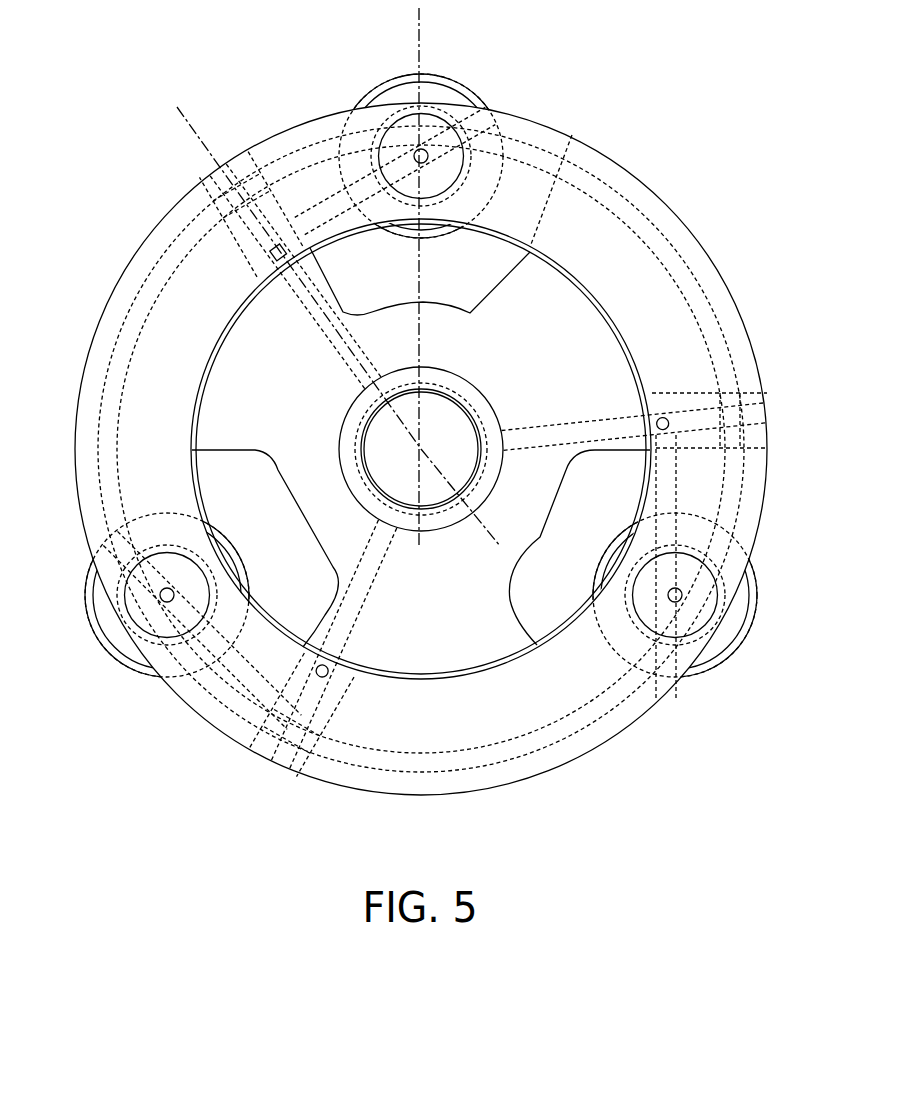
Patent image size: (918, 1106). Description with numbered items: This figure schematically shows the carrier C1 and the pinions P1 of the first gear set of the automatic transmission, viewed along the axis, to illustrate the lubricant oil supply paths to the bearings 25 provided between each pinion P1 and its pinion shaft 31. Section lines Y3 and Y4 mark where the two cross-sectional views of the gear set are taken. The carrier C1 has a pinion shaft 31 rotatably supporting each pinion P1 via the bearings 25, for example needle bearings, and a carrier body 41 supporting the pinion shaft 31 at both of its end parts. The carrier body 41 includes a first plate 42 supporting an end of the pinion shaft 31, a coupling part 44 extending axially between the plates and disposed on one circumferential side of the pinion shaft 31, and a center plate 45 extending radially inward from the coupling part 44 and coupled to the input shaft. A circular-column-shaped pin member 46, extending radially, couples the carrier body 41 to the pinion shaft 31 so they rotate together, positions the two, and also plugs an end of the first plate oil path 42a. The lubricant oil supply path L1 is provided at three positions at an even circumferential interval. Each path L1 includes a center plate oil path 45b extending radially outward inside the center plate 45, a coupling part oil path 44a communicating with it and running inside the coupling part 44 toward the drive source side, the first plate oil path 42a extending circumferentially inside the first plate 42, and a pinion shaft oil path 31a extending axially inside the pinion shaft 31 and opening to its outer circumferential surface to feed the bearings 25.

The carrier body 41 is at (612, 157).
The first plate 42 is at (572, 137).
The first plate oil path 42a is at (300, 213).
The coupling part 44 is at (148, 308).
The coupling part oil path 44a is at (267, 247).
The center plate 45 is at (235, 450).
The center plate oil path 45b is at (355, 380).
The pin member 46 is at (492, 113).
The pinion shaft 31 is at (382, 135).
The pinion shaft oil path 31a is at (462, 158).
The bearing 25 is at (472, 186).
The pinion P1 is at (452, 236).
The lubricant oil supply path L1 is at (330, 346).
The carrier C1 is at (676, 191).
The line Y3- Y3 is at (424, 15).
The line Y4- Y4 is at (182, 104).